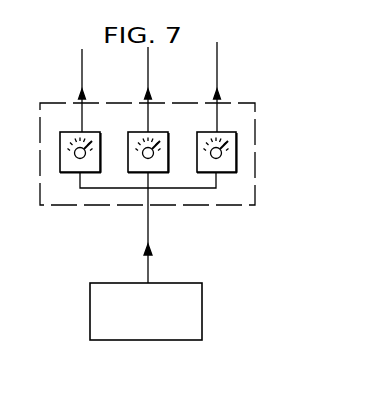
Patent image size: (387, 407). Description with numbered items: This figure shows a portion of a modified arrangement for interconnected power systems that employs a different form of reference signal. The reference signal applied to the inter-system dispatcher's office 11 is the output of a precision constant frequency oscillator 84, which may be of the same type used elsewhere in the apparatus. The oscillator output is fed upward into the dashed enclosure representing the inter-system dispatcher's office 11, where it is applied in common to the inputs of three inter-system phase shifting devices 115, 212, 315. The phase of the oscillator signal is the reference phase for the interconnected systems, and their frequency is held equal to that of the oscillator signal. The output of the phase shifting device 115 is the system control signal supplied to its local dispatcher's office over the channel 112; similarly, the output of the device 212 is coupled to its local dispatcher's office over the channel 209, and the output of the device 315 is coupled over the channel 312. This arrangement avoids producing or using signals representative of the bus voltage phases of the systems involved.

The inter-system dispatcher's office 11 is at (40, 130).
The precision constant frequency oscillator 84 is at (90, 298).
The channel 112 is at (82, 68).
The channel 209 is at (148, 70).
The channel 312 is at (217, 70).
The phase shifting device 115 is at (87, 132).
The phase shifting device 212 is at (156, 132).
The phase shifting device 315 is at (245, 130).